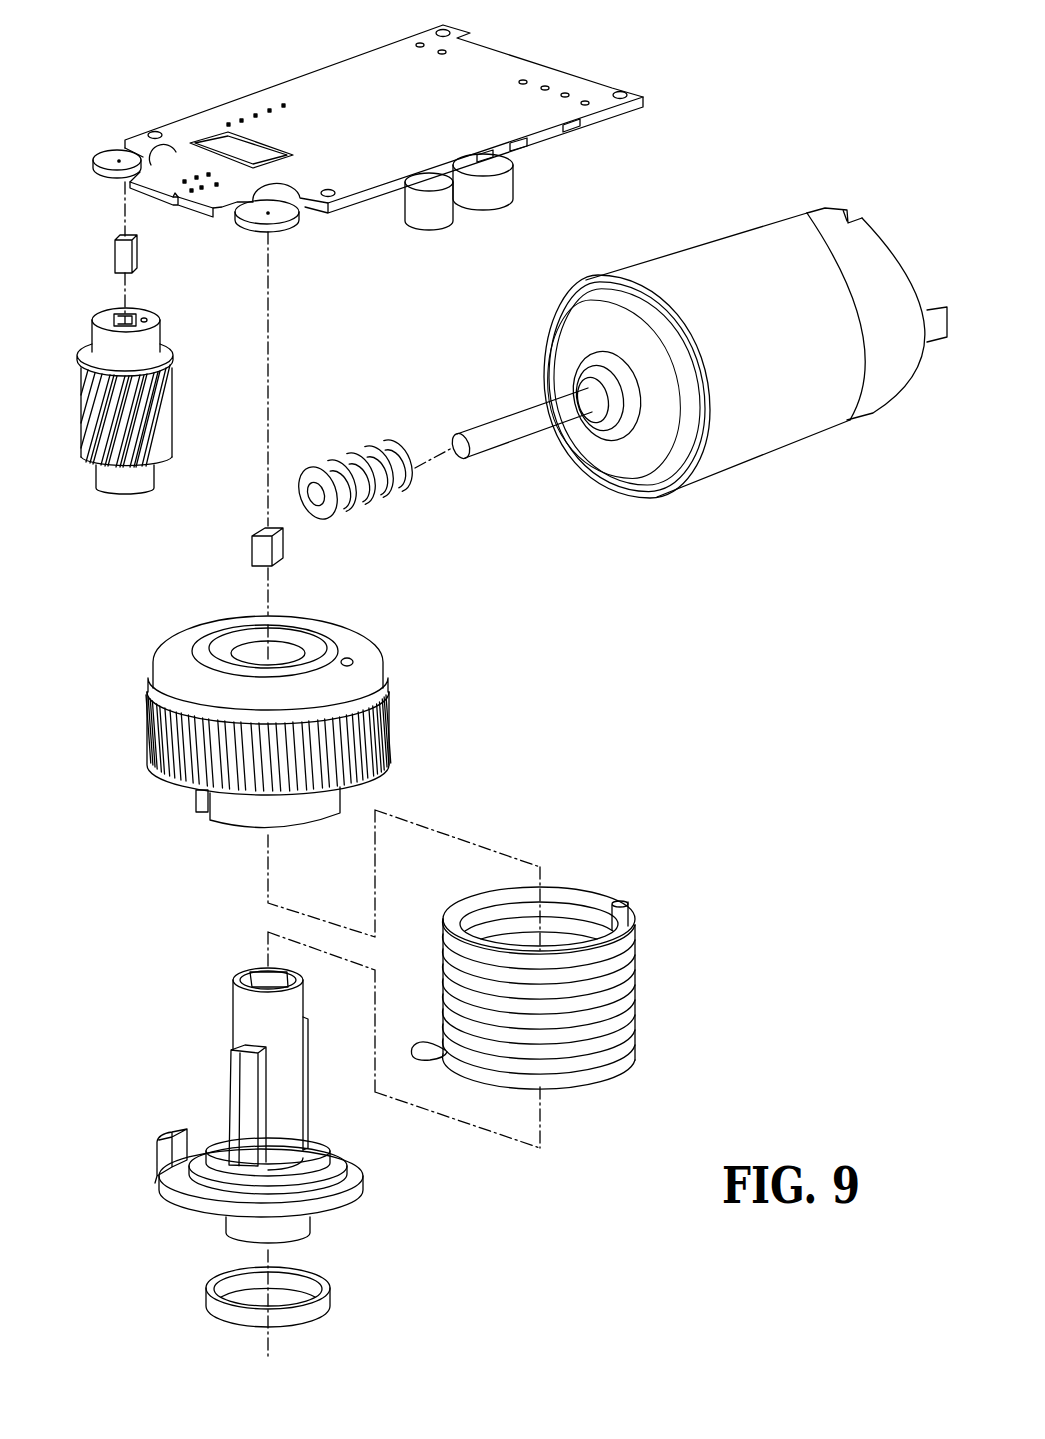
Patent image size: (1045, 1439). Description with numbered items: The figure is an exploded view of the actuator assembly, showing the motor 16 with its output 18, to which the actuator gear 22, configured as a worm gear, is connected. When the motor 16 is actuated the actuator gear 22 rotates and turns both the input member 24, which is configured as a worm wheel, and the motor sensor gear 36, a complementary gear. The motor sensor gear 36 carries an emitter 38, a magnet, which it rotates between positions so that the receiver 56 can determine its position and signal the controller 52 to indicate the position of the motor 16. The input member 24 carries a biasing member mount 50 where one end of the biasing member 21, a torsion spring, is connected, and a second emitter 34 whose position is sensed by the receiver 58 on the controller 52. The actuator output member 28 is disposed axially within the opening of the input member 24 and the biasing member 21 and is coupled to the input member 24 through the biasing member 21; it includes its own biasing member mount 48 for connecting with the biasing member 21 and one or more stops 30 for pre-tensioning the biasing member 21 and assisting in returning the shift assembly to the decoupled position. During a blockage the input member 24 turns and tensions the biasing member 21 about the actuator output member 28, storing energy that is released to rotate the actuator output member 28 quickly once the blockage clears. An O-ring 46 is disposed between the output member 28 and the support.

The motor 16 is at (700, 258).
The output 18 is at (515, 423).
The biasing member 21 is at (618, 998).
The actuator gear 22 is at (352, 462).
The input member 24 is at (152, 727).
The actuator output member 28 is at (244, 1010).
The stops 30 is at (307, 1060).
The emitter 34 is at (255, 548).
The motor sensor gear 36 is at (102, 338).
The emitter 38 is at (118, 256).
The O-ring 46 is at (330, 1300).
The biasing member mount 48 is at (160, 1150).
The biasing member mount 50 is at (348, 662).
The controller 52 is at (323, 88).
The receiver 56 is at (112, 158).
The receiver 58 is at (280, 210).